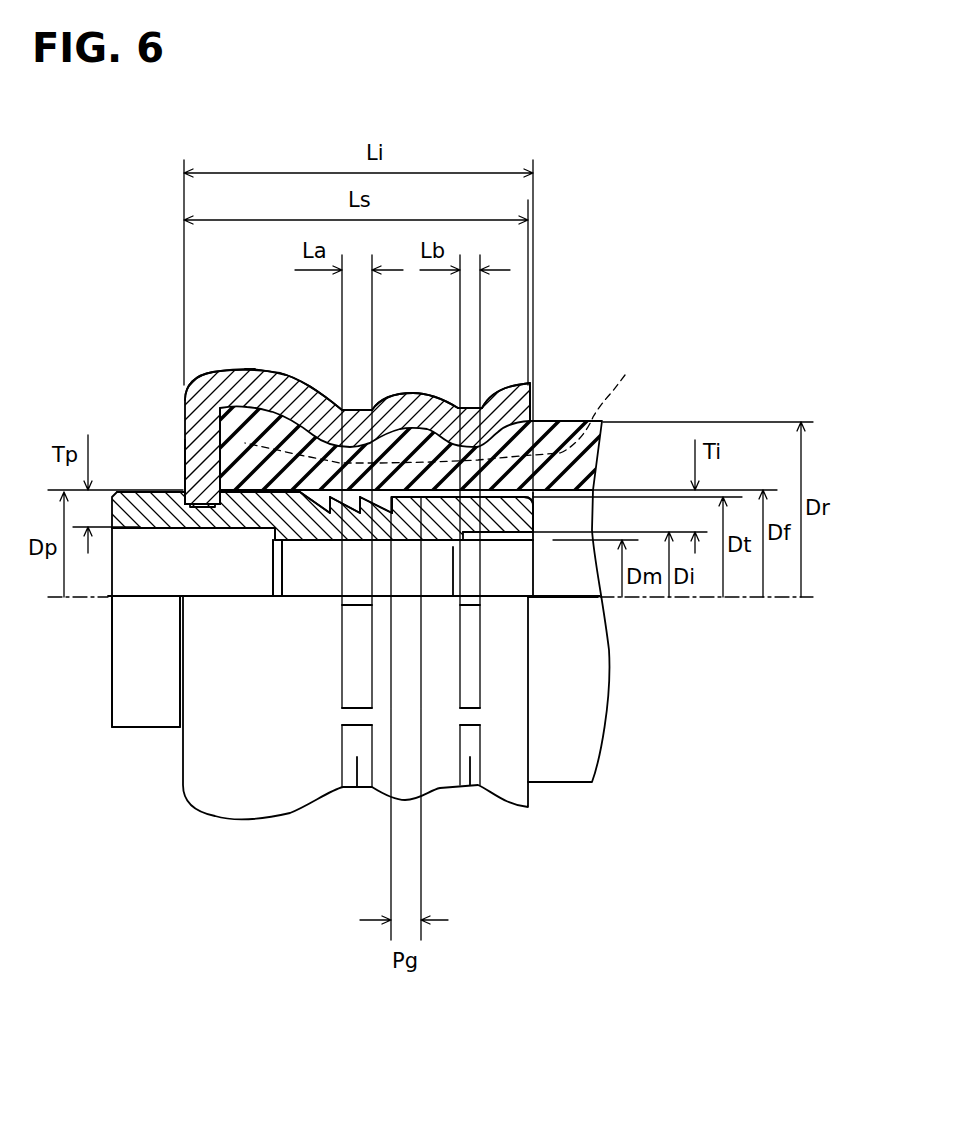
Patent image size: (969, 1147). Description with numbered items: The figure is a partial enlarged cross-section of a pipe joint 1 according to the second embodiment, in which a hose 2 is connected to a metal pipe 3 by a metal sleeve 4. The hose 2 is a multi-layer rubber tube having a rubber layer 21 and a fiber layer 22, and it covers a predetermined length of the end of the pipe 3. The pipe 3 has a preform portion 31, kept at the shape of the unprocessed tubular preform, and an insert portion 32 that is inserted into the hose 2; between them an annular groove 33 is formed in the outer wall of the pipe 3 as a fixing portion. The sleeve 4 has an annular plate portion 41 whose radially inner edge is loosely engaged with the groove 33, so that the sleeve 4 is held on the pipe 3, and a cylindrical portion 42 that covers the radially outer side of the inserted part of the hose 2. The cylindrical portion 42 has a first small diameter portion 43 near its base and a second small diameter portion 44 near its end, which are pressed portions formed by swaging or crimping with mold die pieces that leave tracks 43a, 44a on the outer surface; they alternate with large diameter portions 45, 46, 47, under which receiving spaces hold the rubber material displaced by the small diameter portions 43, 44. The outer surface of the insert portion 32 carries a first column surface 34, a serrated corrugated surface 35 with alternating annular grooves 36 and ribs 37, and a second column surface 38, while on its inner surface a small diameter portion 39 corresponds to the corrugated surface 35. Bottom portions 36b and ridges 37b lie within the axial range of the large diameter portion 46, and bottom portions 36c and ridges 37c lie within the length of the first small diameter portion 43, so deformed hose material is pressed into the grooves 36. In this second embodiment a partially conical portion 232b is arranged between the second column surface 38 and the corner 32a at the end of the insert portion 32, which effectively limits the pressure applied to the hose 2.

The pipe joint 1 is at (571, 241).
The hose 2 is at (560, 420).
The rubber layer 21 is at (562, 428).
The fiber layer 22 is at (444, 407).
The pipe 3 is at (178, 640).
The preform portion 31 is at (148, 513).
The insert portion 32 is at (243, 512).
The corner 32a is at (463, 538).
The partially conical portion 232b is at (497, 525).
The annular groove 33 is at (200, 518).
The first column surface 34 is at (155, 728).
The corrugated surface 35 is at (320, 505).
The annular grooves 36 is at (340, 507).
The bottom portions 36b is at (457, 607).
The bottom portions 36c is at (282, 590).
The ribs 37 is at (362, 508).
The ridges 37b is at (478, 607).
The ridges 37c is at (300, 600).
The second column surface 38 is at (500, 540).
The small diameter portion 39 is at (463, 545).
The sleeve 4 is at (185, 403).
The annular plate portion 41 is at (192, 458).
The cylindrical portion 42 is at (238, 375).
The first small diameter portion 43 is at (352, 405).
The track 43a is at (357, 757).
The second small diameter portion 44 is at (462, 407).
The track 44a is at (470, 757).
The large diameter portion 45 is at (259, 375).
The large diameter portion 46 is at (411, 430).
The large diameter portion 47 is at (503, 388).